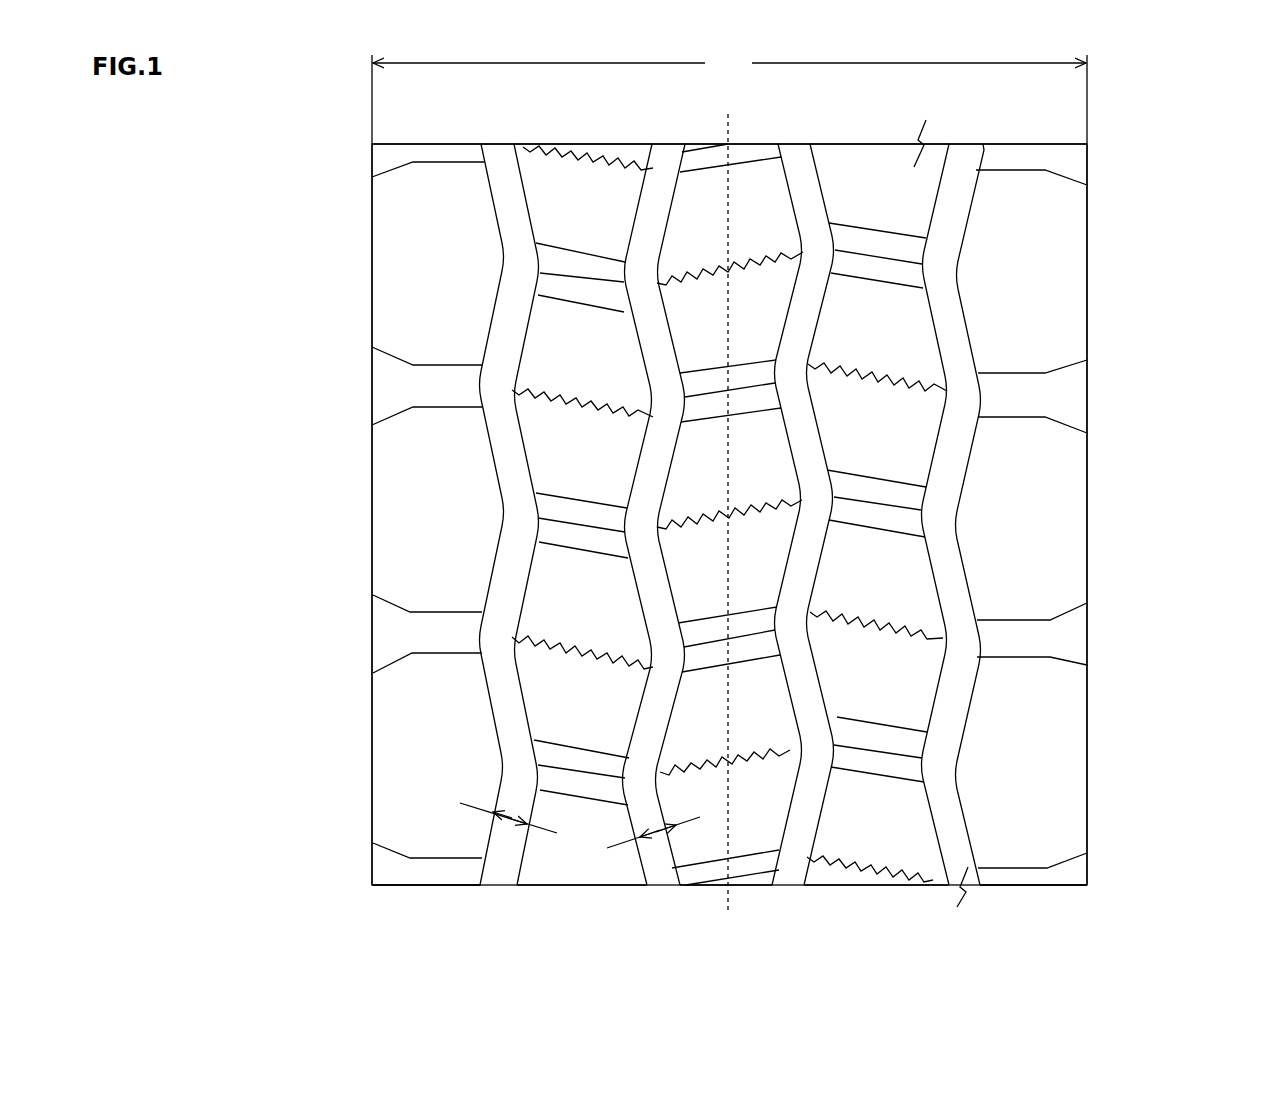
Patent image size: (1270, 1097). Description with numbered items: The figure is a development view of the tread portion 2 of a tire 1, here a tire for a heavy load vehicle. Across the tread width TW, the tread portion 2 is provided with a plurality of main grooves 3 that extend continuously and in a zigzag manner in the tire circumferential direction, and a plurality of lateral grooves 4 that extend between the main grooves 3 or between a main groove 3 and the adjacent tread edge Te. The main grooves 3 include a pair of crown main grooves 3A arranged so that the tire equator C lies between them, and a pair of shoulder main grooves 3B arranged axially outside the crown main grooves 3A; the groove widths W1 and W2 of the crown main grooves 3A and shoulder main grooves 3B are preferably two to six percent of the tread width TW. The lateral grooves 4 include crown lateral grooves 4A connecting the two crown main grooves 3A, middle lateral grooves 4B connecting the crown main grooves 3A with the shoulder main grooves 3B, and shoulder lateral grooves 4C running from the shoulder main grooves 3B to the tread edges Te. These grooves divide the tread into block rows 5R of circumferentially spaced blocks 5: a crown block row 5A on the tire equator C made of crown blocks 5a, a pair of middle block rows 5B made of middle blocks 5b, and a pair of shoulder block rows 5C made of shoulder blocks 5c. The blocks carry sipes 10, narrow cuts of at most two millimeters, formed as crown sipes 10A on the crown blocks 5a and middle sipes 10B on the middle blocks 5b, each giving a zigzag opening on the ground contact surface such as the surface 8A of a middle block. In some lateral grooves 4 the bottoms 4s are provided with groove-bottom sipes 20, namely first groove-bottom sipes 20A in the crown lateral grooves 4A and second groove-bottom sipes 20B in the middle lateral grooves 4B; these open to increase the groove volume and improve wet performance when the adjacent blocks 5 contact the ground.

The tire 1 is at (1195, 108).
The tread portion 2 is at (1103, 131).
The main grooves 3 is at (737, 495).
The crown main grooves 3A is at (663, 192).
The shoulder main grooves 3B is at (500, 193).
The lateral grooves 4 is at (730, 514).
The crown lateral grooves 4A is at (748, 373).
The middle lateral grooves 4B is at (582, 266).
The shoulder lateral grooves 4C is at (430, 390).
The bottoms 4s is at (565, 535).
The blocks 5 is at (738, 552).
The crown blocks 5a is at (703, 562).
The middle blocks 5b is at (545, 668).
The shoulder blocks 5c is at (400, 768).
The block rows 5R is at (721, 885).
The crown block row 5A is at (753, 825).
The middle block rows 5B is at (568, 843).
The shoulder block rows 5C is at (428, 812).
The ground contact surface 8A is at (563, 702).
The sipe 10 is at (730, 539).
The crown sipe 10A is at (830, 717).
The middle sipe 10B is at (570, 647).
The groove-bottom sipes 20 is at (730, 567).
The first groove-bottom sipes 20A is at (753, 632).
The second groove-bottom sipes 20B is at (580, 500).
The tread edge Te is at (372, 196).
The tread width TW is at (729, 97).
The tire equator C is at (729, 500).
The groove width W1 is at (650, 833).
The groove width W2 is at (500, 812).